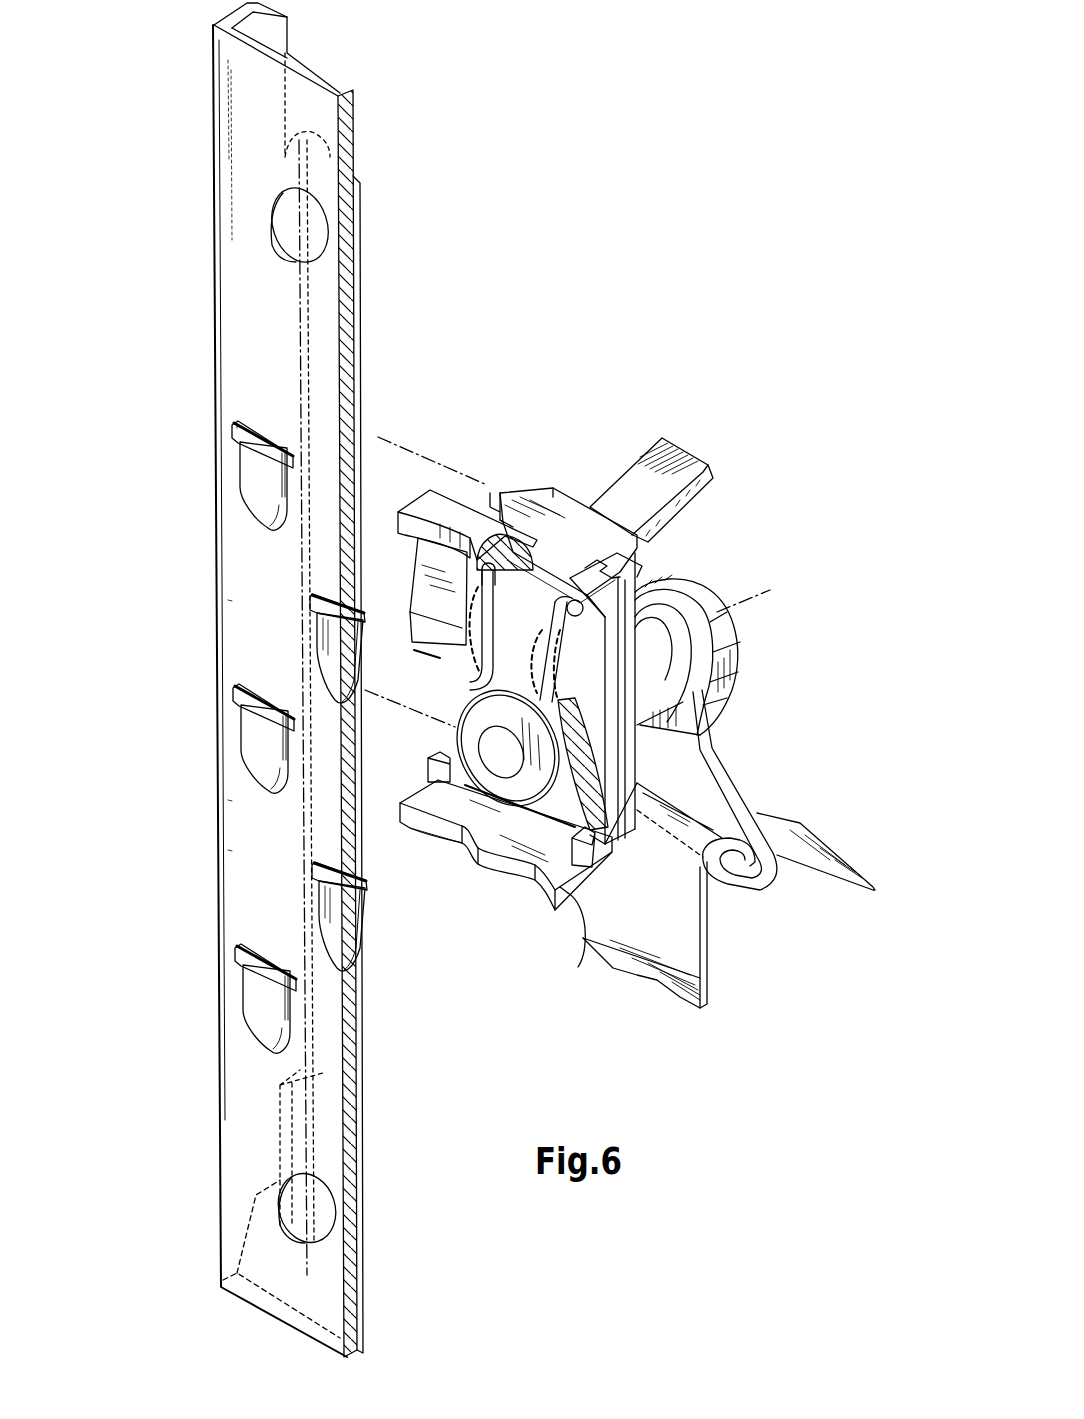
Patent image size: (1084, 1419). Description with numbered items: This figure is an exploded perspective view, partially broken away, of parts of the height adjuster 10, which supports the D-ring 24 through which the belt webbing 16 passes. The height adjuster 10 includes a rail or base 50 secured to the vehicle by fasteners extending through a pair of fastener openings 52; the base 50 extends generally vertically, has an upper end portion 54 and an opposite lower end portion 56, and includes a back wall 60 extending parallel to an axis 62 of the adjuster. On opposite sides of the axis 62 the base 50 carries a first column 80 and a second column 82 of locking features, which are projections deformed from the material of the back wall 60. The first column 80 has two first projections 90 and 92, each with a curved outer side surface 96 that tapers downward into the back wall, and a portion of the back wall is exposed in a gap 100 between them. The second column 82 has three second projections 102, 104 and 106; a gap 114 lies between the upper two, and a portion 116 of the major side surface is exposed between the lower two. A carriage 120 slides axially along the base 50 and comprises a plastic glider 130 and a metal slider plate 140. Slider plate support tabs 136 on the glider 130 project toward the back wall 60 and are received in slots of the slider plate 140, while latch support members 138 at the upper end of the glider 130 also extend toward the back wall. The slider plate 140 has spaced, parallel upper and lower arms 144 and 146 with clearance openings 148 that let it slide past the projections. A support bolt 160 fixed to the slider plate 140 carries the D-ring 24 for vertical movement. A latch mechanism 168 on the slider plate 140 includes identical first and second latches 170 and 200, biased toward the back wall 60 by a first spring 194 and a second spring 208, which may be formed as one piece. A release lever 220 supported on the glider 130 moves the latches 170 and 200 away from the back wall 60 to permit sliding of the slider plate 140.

The height adjuster 10 is at (708, 252).
The belt webbing 16 is at (704, 952).
The D-ring 24 is at (762, 880).
The base 50 is at (200, 680).
The fastener openings 52 is at (275, 225).
The upper end portion 54 is at (362, 146).
The lower end portion 56 is at (388, 1218).
The back wall 60 is at (275, 628).
The axis 62 is at (300, 330).
The first column 80 is at (327, 593).
The second column 82 is at (263, 423).
The first projection 90 is at (375, 613).
The first projection 92 is at (320, 912).
The curved outer side surface 96 is at (362, 952).
The gap 100 is at (270, 800).
The second projection 102 is at (240, 472).
The second projection 104 is at (241, 747).
The second projection 106 is at (243, 1020).
The gap 114 is at (265, 598).
The portion of the major side surface 116 is at (270, 850).
The carriage 120 is at (545, 985).
The glider 130 is at (563, 490).
The slider plate support tabs 136 is at (610, 880).
The latch support members 138 is at (677, 613).
The slider plate 140 is at (515, 893).
The upper arm 144 is at (420, 500).
The lower arm 146 is at (578, 967).
The clearance openings 148 is at (442, 833).
The support bolt 160 is at (723, 638).
The latch mechanism 168 is at (586, 680).
The first latch 170 is at (537, 592).
The first spring 194 is at (690, 753).
The second latch 200 is at (415, 653).
The second spring 208 is at (477, 683).
The release lever 220 is at (662, 438).